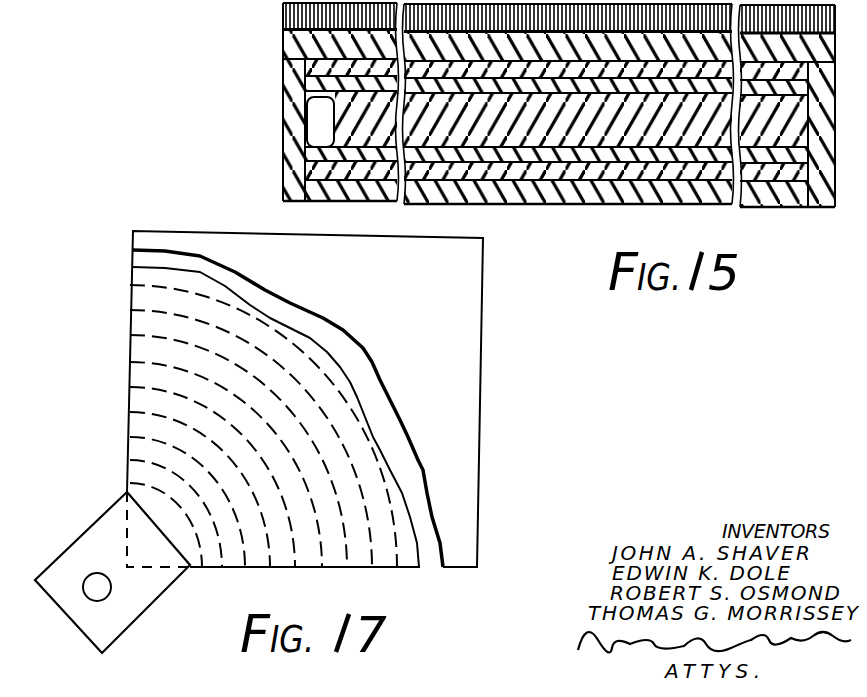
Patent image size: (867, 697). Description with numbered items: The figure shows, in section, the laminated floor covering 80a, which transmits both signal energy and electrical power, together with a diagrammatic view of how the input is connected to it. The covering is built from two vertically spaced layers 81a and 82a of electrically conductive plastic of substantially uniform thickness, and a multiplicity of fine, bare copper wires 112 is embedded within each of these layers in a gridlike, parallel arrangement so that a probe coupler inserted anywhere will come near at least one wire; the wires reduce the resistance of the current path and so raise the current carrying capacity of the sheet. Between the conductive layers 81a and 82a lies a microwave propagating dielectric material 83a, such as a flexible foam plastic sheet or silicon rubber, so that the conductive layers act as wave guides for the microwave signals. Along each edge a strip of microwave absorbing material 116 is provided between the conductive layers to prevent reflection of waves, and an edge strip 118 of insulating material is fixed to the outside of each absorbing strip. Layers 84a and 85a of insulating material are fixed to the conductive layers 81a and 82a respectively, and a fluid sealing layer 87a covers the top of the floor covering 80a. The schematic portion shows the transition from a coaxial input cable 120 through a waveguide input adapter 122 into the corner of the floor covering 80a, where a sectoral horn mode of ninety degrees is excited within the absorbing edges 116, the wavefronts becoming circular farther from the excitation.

In FIG. 15, the fluid sealing layer 87a is at (285, 22).
In FIG. 15, the insulating layer 84a is at (286, 45).
In FIG. 15, the conductive layer 81a is at (287, 70).
In FIG. 15, the microwave propagating dielectric material 83a is at (300, 93).
In FIG. 15, the microwave absorbing strip 116 is at (300, 122).
In FIG. 15, the conductive layer 82a is at (287, 153).
In FIG. 15, the insulating layer 85a is at (287, 185).
In FIG. 15, the edge strip 118 is at (283, 203).
In FIG. 15, the bare wires 112 is at (497, 205).
In FIG. 17, the laminated floor covering 80a is at (557, 423).
In FIG. 17, the coaxial input cable 120 is at (92, 585).
In FIG. 17, the waveguide input adapter 122 is at (118, 623).